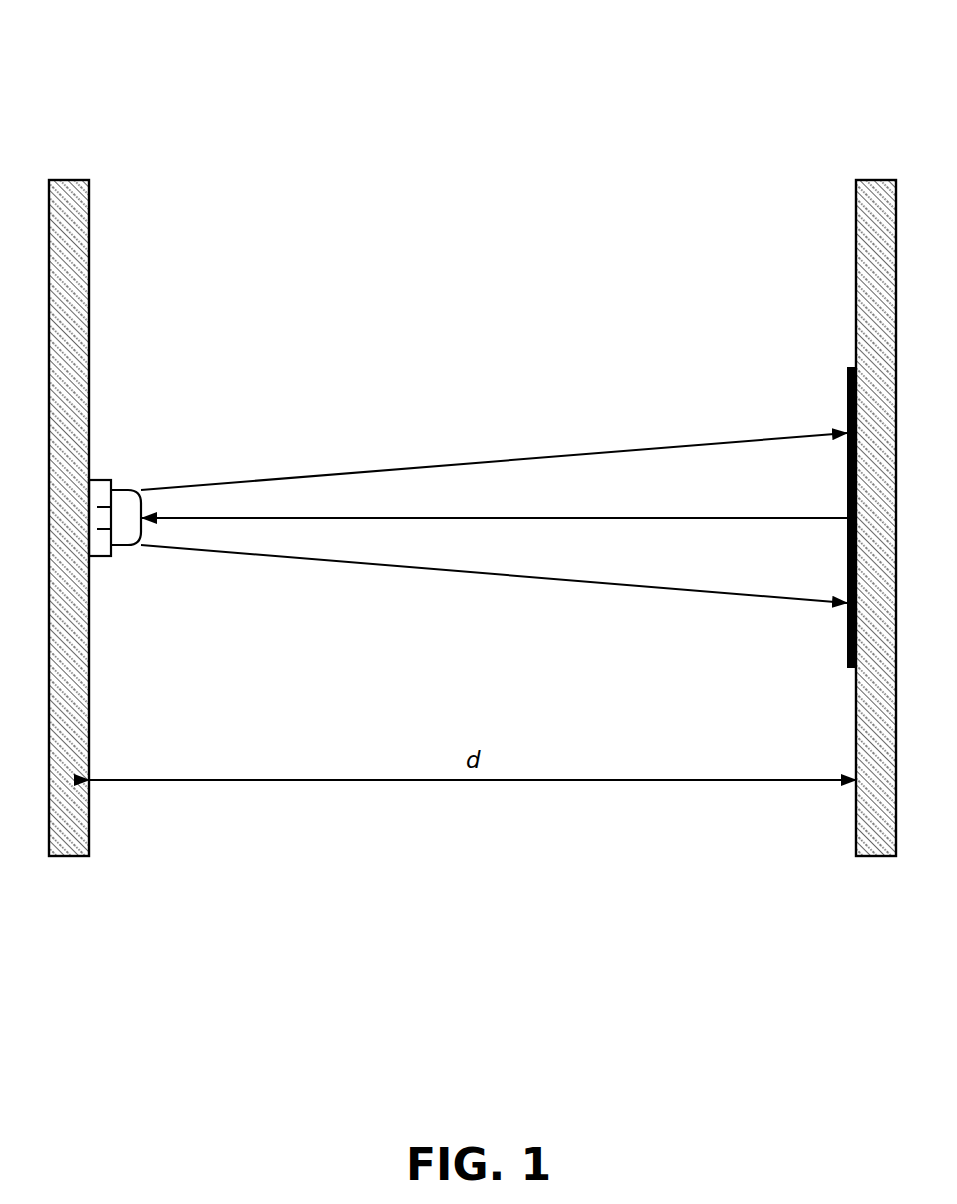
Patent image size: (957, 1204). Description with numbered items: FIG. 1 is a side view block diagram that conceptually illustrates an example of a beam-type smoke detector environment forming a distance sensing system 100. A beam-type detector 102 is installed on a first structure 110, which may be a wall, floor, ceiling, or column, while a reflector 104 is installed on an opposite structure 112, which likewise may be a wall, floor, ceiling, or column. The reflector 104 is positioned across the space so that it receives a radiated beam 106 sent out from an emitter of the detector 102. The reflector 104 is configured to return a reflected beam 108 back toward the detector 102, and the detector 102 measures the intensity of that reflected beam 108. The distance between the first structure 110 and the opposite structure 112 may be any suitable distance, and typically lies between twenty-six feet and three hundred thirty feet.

The distance sensing system 100 is at (122, 62).
The beam-type detector 102 is at (99, 480).
The reflector 104 is at (847, 367).
The radiated beam 106 is at (763, 436).
The reflected beam 108 is at (664, 515).
The first structure 110 is at (89, 313).
The opposite structure 112 is at (856, 313).